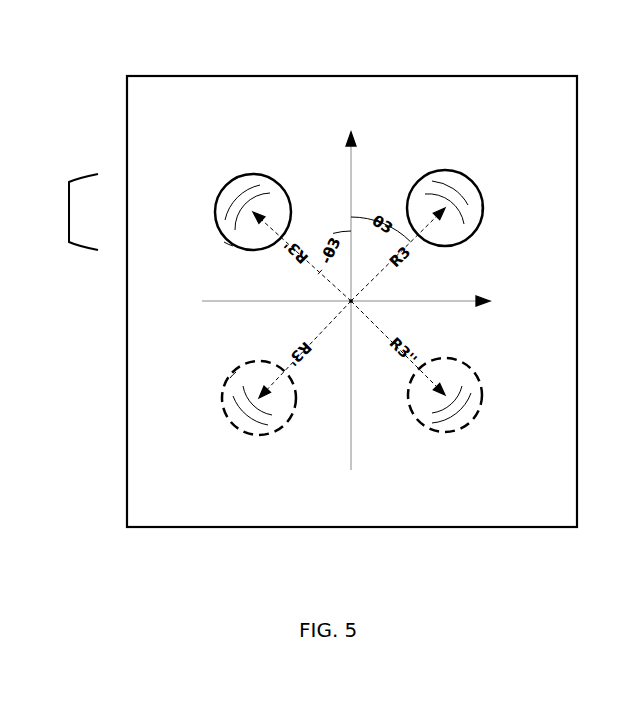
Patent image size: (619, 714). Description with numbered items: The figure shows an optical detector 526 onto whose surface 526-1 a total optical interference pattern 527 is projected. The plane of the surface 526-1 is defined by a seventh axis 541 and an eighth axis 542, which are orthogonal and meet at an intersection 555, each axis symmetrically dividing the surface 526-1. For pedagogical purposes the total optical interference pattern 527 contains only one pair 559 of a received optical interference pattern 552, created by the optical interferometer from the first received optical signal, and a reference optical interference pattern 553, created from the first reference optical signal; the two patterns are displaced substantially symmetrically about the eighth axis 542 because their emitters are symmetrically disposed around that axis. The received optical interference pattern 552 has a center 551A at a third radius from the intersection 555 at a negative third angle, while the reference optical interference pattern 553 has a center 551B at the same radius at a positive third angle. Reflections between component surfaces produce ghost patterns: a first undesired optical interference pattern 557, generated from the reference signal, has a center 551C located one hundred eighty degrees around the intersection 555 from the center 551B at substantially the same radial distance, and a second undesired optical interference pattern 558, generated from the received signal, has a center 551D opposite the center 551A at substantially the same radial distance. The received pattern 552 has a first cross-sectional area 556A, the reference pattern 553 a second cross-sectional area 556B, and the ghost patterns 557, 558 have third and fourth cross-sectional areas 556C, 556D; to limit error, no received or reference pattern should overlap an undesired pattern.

The optical detector 526 is at (180, 107).
The surface 526-1 is at (258, 103).
The total optical interference pattern 527 is at (408, 112).
The seventh axis 541 is at (445, 303).
The eighth axis 542 is at (351, 207).
The center of received optical interference pattern 551A is at (252, 203).
The center of reference optical interference pattern 551B is at (450, 207).
The center of first undesired optical interference pattern 551C is at (258, 404).
The center of second undesired optical interference pattern 551D is at (447, 397).
The received optical interference pattern 552 is at (231, 242).
The reference optical interference pattern 553 is at (483, 208).
The intersection 555 is at (350, 302).
The first cross-sectional area 556A is at (215, 213).
The second cross-sectional area 556B is at (445, 170).
The third cross-sectional area 556C is at (297, 396).
The fourth cross-sectional area 556D is at (445, 433).
The first undesired optical interference pattern 557 is at (235, 375).
The second undesired optical interference pattern 558 is at (482, 395).
The pair 559 is at (69, 212).